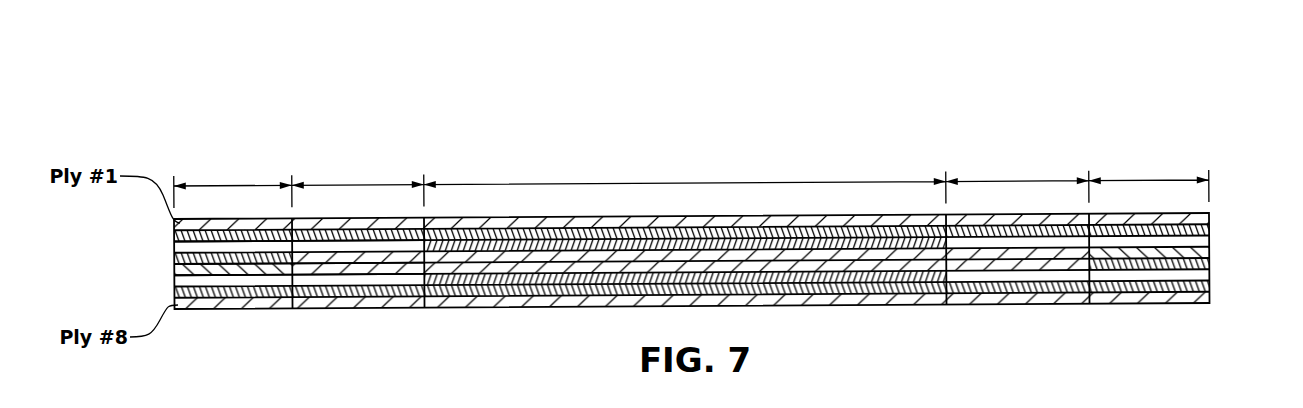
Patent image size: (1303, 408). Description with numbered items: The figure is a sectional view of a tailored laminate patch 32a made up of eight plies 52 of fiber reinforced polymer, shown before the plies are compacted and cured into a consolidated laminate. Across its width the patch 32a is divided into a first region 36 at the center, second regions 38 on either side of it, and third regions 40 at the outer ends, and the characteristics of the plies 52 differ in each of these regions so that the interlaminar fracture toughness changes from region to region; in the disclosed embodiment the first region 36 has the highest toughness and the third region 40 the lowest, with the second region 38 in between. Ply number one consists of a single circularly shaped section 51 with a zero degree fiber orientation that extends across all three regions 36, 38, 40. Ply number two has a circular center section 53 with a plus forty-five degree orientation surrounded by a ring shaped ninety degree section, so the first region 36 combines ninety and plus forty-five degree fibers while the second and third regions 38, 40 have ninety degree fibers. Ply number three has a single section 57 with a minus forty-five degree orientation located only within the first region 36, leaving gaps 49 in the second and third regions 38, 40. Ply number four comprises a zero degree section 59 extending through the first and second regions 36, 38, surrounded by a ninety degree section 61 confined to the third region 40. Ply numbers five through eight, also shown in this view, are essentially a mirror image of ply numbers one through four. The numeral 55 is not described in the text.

The tailored laminate patch 32a is at (140, 112).
The first region 36 is at (636, 184).
The second region 38 is at (358, 186).
The third region 40 is at (230, 186).
The gaps 49 is at (265, 247).
The circularly shaped section 51 is at (702, 228).
The plies 52 is at (178, 282).
The circular center section 53 is at (787, 233).
The fabric ply 55 is at (475, 232).
The section 57 is at (828, 242).
The section 59 is at (505, 240).
The section 61 is at (1210, 249).